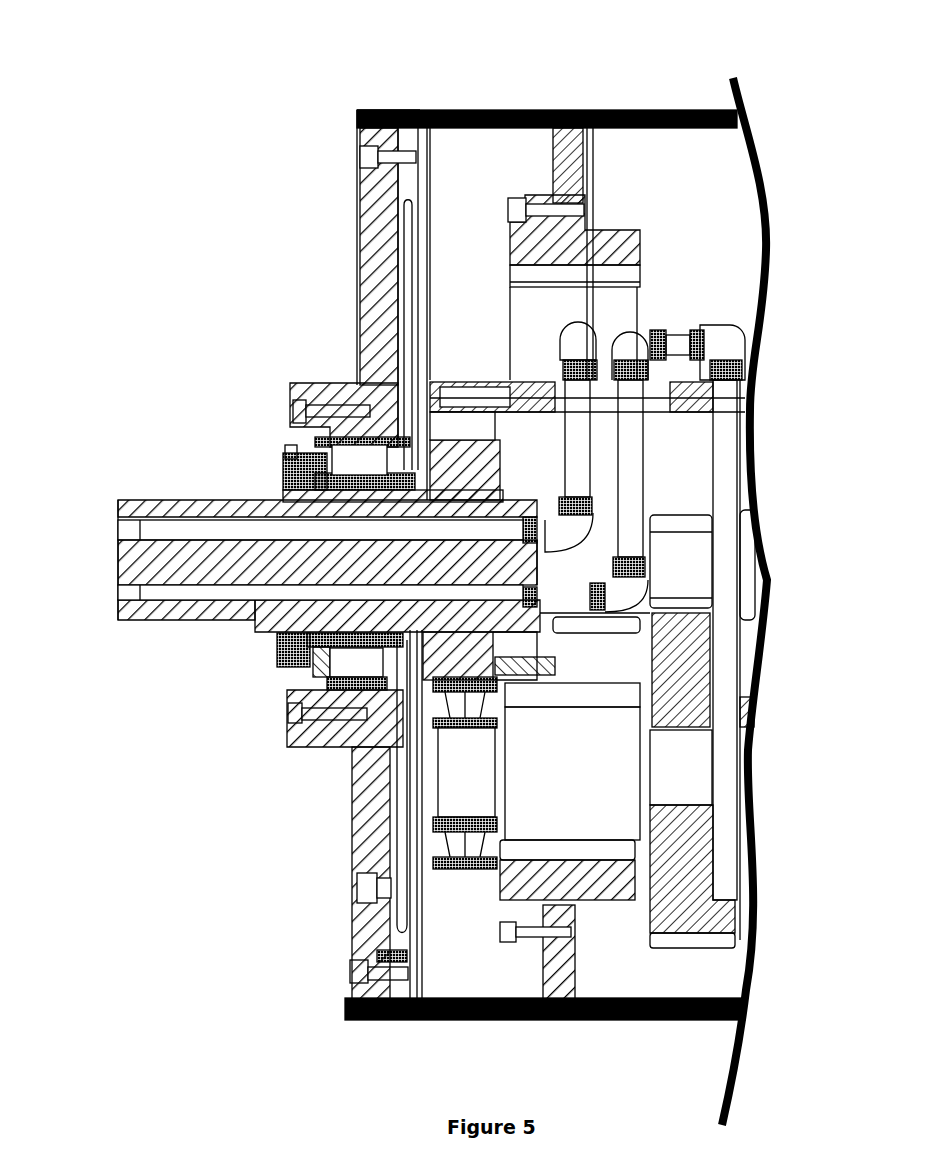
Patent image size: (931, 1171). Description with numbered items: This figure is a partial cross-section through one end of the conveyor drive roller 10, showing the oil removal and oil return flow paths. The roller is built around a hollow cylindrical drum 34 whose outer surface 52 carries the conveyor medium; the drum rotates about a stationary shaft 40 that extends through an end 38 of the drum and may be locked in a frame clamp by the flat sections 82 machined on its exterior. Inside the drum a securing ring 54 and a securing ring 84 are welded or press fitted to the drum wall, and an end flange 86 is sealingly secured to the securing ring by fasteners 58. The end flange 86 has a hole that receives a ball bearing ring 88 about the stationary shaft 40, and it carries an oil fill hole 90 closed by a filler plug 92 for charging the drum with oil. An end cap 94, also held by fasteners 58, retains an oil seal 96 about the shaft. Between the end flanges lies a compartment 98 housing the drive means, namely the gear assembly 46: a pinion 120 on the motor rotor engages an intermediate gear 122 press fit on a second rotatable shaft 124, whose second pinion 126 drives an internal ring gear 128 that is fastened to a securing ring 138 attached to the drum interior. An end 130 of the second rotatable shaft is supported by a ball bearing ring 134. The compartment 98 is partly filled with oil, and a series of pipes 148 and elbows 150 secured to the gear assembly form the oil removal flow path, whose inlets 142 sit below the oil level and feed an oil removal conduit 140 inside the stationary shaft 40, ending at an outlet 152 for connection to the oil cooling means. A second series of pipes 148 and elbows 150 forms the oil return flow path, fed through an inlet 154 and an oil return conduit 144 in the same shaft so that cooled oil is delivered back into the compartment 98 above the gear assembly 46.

The conveyor drive roller 10 is at (786, 64).
The cylindrical drum 34 is at (496, 110).
The end 38 is at (357, 112).
The stationary shaft 40 is at (145, 500).
The gear assembly 46 is at (636, 903).
The outer surface 52 is at (636, 110).
The securing ring 54 is at (415, 165).
The fasteners 58 is at (360, 156).
The flat sections 82 is at (192, 500).
The securing ring 84 is at (400, 960).
The end flange 86 is at (368, 242).
The ball bearing ring 88 is at (362, 673).
The oil fill hole 90 is at (362, 880).
The filler plug 92 is at (370, 895).
The end cap 94 is at (295, 385).
The oil seal 96 is at (280, 655).
The compartment 98 is at (700, 112).
The pinion 120 is at (700, 576).
The intermediate gear 122 is at (706, 689).
The second rotatable shaft 124 is at (705, 787).
The second pinion 126 is at (588, 788).
The internal ring gear 128 is at (640, 240).
The end of second rotatable shaft 130 is at (490, 781).
The ball bearing ring 134 is at (485, 718).
The securing ring 138 is at (585, 160).
The oil removal conduit 140 is at (200, 595).
The inlets 142 is at (720, 905).
The oil return conduit 144 is at (168, 532).
The pipes 148 is at (725, 330).
The elbows 150 is at (565, 455).
The outlet of oil removal conduit 152 is at (118, 602).
The inlet of oil return conduit 154 is at (118, 538).